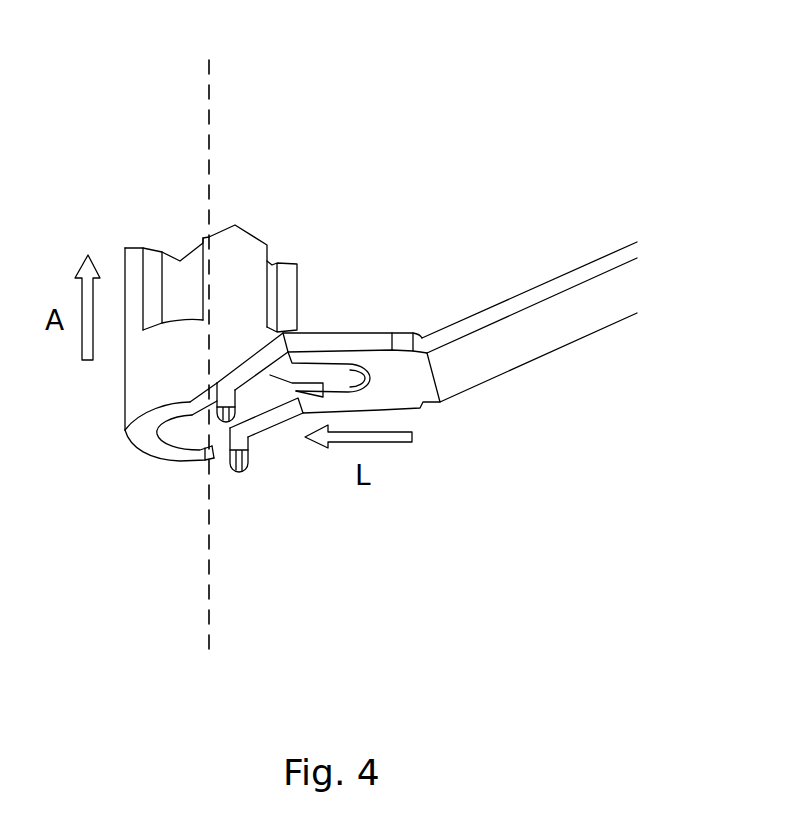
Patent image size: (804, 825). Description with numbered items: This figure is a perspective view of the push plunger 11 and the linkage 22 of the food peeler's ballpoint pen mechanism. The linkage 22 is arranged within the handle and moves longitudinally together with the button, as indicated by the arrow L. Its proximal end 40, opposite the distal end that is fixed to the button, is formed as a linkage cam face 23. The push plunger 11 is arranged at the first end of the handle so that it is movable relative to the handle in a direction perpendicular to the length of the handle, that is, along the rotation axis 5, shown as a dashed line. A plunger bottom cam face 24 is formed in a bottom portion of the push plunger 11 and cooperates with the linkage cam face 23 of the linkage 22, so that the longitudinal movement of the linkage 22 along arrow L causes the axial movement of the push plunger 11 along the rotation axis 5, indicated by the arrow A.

The rotation axis 5 is at (208, 162).
The push plunger 11 is at (138, 375).
The linkage 22 is at (567, 317).
The linkage cam face 23 is at (228, 367).
The plunger bottom cam face 24 is at (222, 445).
The proximal end 40 is at (262, 360).